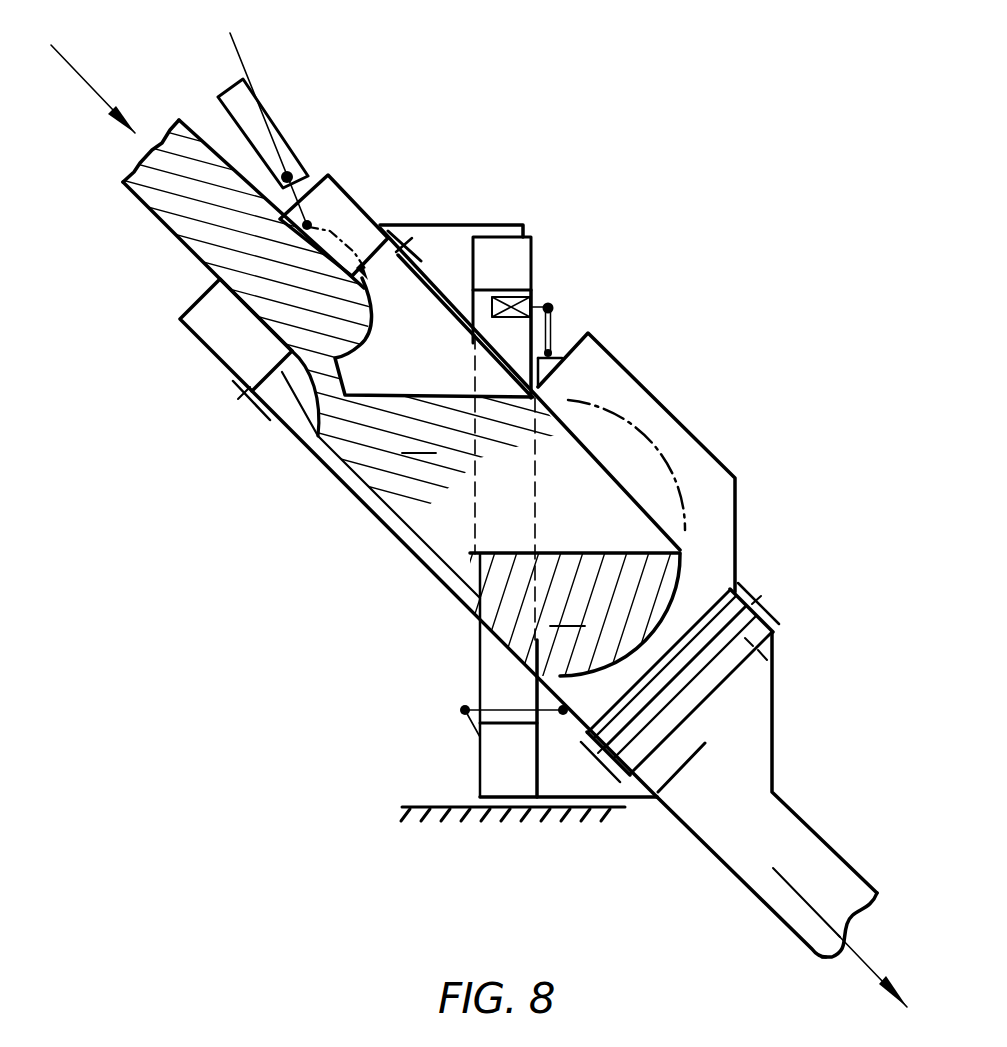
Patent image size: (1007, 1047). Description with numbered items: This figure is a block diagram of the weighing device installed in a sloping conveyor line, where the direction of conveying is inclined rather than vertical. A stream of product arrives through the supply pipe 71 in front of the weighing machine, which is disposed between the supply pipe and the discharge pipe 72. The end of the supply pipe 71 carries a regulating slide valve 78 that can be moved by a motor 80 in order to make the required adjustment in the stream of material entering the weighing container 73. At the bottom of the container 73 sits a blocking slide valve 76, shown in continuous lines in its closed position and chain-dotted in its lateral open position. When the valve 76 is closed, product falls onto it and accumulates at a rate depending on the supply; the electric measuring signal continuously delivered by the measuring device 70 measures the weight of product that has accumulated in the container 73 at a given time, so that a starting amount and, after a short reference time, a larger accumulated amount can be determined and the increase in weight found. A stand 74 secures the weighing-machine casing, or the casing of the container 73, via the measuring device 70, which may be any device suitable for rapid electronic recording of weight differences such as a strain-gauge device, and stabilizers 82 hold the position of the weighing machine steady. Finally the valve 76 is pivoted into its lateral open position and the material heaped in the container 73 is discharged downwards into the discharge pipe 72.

The measuring device 70 is at (548, 302).
The supply pipe 71 is at (177, 233).
The discharge pipe 72 is at (847, 861).
The weighing container 73 is at (329, 460).
The stand 74 is at (497, 248).
The blocking slide valve 76 is at (680, 580).
The regulating slide valve 78 is at (368, 322).
The motor 80 is at (287, 172).
The stabilizers 82 is at (505, 703).